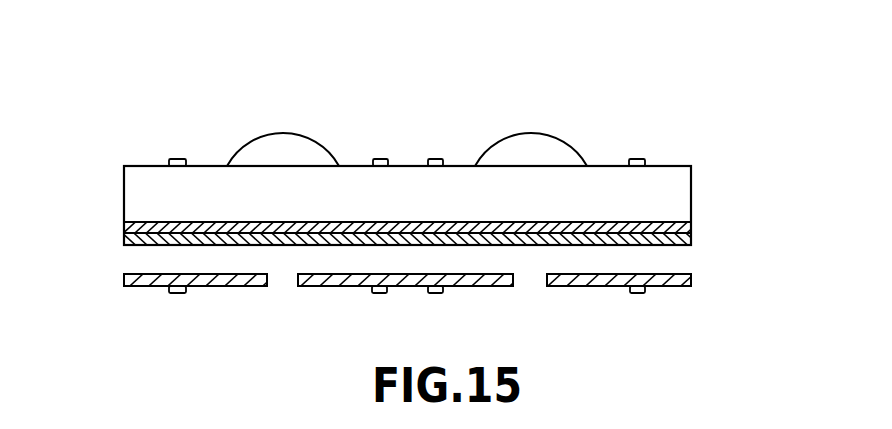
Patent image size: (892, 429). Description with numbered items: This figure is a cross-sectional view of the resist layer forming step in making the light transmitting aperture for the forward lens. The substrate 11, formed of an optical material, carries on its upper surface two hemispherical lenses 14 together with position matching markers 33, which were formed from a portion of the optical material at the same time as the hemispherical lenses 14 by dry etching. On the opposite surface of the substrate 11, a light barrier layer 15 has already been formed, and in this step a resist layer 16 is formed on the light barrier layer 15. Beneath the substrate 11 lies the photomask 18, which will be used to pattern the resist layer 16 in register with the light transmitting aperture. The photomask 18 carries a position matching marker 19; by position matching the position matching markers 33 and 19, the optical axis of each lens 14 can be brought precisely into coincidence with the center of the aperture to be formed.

The substrate 11 is at (691, 180).
The hemispherical lens 14 is at (305, 137).
The light barrier layer 15 is at (691, 227).
The resist layer 16 is at (691, 241).
The photomask 18 is at (691, 283).
The position matching marker 19 is at (175, 293).
The position matching marker 33 is at (177, 159).